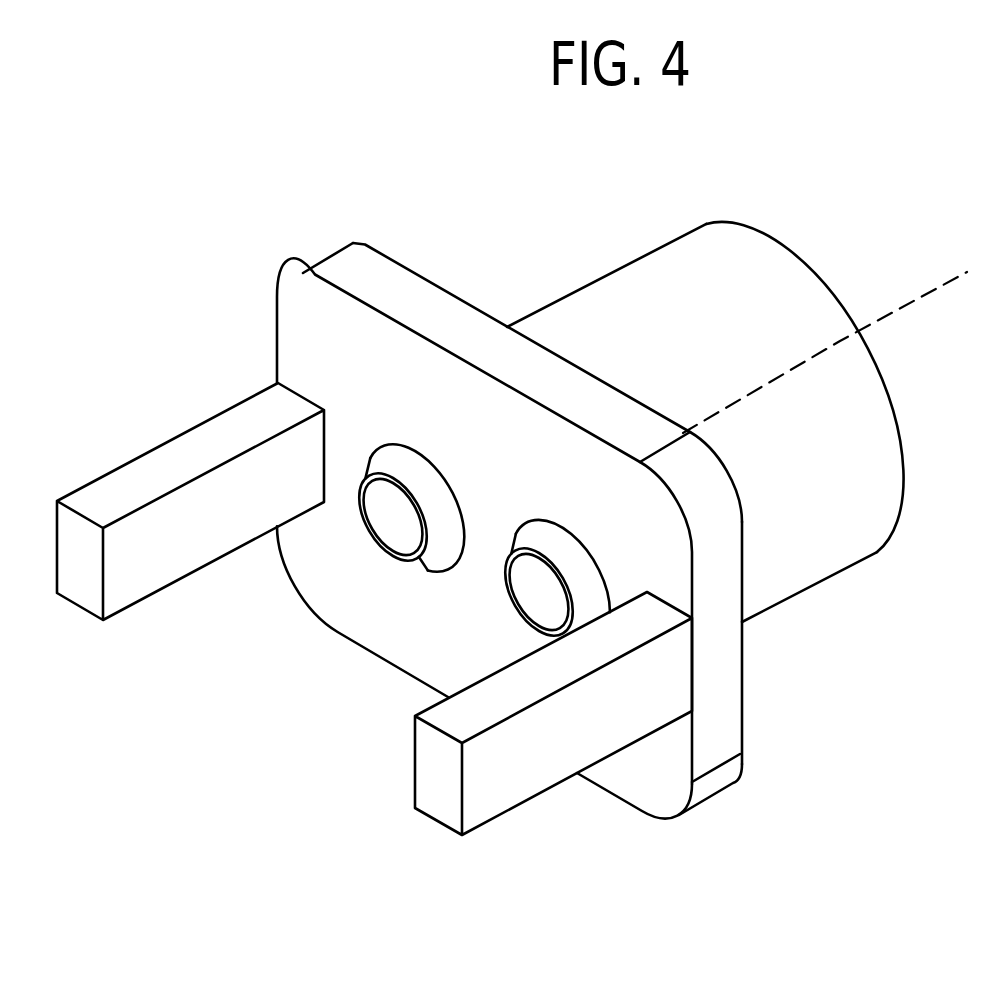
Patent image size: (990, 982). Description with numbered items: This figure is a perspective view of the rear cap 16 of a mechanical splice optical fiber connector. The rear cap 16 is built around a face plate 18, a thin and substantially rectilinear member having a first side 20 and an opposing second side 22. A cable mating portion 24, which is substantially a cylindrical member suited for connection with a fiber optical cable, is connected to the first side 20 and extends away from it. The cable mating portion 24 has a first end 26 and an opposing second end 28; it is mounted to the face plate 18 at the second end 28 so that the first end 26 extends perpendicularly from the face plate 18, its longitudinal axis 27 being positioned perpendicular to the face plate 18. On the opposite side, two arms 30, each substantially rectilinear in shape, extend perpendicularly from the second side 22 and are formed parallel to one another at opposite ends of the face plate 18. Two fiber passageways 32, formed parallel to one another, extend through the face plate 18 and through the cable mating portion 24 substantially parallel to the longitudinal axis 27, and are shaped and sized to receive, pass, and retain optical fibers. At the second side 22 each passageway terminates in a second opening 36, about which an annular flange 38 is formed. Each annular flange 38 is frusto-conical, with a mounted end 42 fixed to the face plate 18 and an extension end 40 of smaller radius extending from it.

The rear cap 16 is at (280, 156).
The face plate 18 is at (387, 293).
The first side 20 is at (742, 735).
The second side 22 is at (638, 778).
The cable mating portion 24 is at (700, 290).
The first end 26 is at (865, 318).
The longitudinal axis 27 is at (928, 295).
The second end 28 is at (742, 662).
The arm 30 is at (147, 483).
The fiber passageway 32 is at (390, 510).
The second opening 36 is at (383, 547).
The annular flange 38 is at (445, 540).
The extension end 40 is at (517, 537).
The mounted end 42 is at (567, 552).